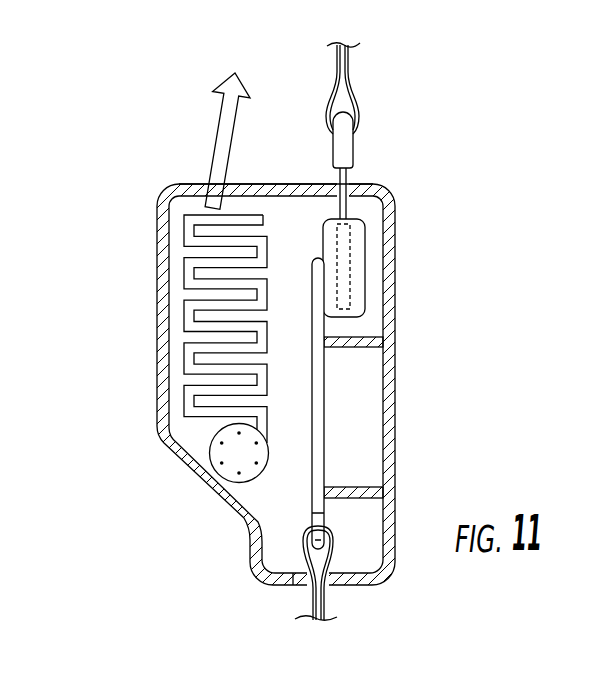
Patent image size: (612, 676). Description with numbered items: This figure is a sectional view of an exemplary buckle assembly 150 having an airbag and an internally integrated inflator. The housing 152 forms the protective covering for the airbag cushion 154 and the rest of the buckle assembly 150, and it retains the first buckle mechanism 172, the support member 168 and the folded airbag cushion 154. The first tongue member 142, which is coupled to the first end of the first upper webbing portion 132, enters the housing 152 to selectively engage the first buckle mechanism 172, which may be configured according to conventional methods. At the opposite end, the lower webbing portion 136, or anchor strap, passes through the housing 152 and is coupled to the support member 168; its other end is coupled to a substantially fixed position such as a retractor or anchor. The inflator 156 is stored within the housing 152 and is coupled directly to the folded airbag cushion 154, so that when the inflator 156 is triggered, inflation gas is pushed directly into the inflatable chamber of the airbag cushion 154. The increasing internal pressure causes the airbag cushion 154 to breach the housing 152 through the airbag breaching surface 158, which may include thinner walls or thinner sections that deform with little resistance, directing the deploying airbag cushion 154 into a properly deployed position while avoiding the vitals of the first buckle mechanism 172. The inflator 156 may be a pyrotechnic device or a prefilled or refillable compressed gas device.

The first upper webbing portion 132 is at (358, 118).
The lower webbing portion 136 is at (308, 600).
The first tongue member 142 is at (353, 150).
The buckle assembly 150 is at (306, 300).
The housing 152 is at (306, 300).
The airbag cushion 154 is at (186, 273).
The inflator 156 is at (228, 459).
The airbag breaching surface 158 is at (268, 184).
The support member 168 is at (325, 416).
The first buckle mechanism 172 is at (365, 275).